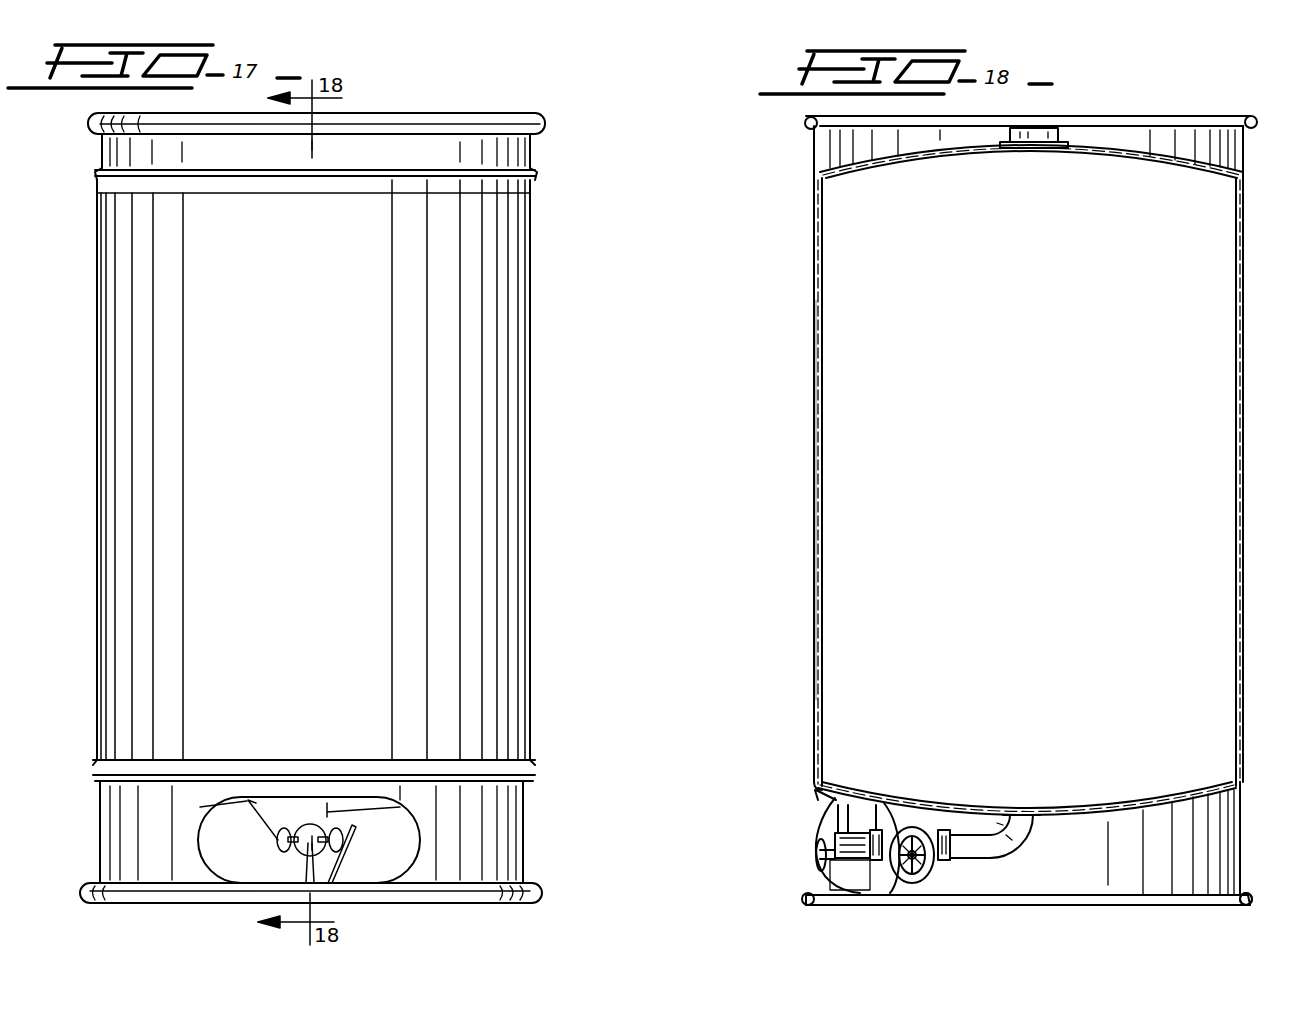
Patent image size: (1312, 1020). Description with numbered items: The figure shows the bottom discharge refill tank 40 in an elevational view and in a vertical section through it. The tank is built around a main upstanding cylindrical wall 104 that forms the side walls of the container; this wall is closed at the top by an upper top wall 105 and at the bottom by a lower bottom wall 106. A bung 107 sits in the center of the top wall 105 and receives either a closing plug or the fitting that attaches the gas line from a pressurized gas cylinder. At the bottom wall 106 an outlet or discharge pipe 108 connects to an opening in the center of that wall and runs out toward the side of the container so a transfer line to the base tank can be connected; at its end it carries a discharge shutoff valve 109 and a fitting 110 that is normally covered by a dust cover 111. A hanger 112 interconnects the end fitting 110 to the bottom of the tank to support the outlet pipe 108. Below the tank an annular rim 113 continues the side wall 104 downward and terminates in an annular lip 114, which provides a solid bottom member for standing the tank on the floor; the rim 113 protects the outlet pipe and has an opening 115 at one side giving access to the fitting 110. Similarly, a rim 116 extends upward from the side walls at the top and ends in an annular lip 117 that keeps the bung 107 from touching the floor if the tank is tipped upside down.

In FIG. 17, the bottom discharge refill tank 40 is at (530, 275).
In FIG. 18, the bottom discharge refill tank 40 is at (814, 258).
In FIG. 17, the main upstanding cylindrical wall 104 is at (530, 440).
In FIG. 18, the main upstanding cylindrical wall 104 is at (812, 390).
In FIG. 18, the upper top wall 105 is at (917, 165).
In FIG. 18, the lower bottom wall 106 is at (908, 815).
In FIG. 18, the bung 107 is at (1058, 140).
In FIG. 18, the outlet or discharge pipe 108 is at (966, 863).
In FIG. 18, the discharge shutoff valve 109 is at (946, 822).
In FIG. 18, the fitting 110 is at (860, 830).
In FIG. 18, the dust cover 111 is at (840, 820).
In FIG. 18, the hanger 112 is at (880, 826).
In FIG. 18, the annular rim 113 is at (1242, 828).
In FIG. 18, the annular lip 114 is at (1250, 902).
In FIG. 18, the opening 115 is at (828, 820).
In FIG. 18, the rim 116 is at (1247, 150).
In FIG. 18, the annular lip 117 is at (1245, 118).